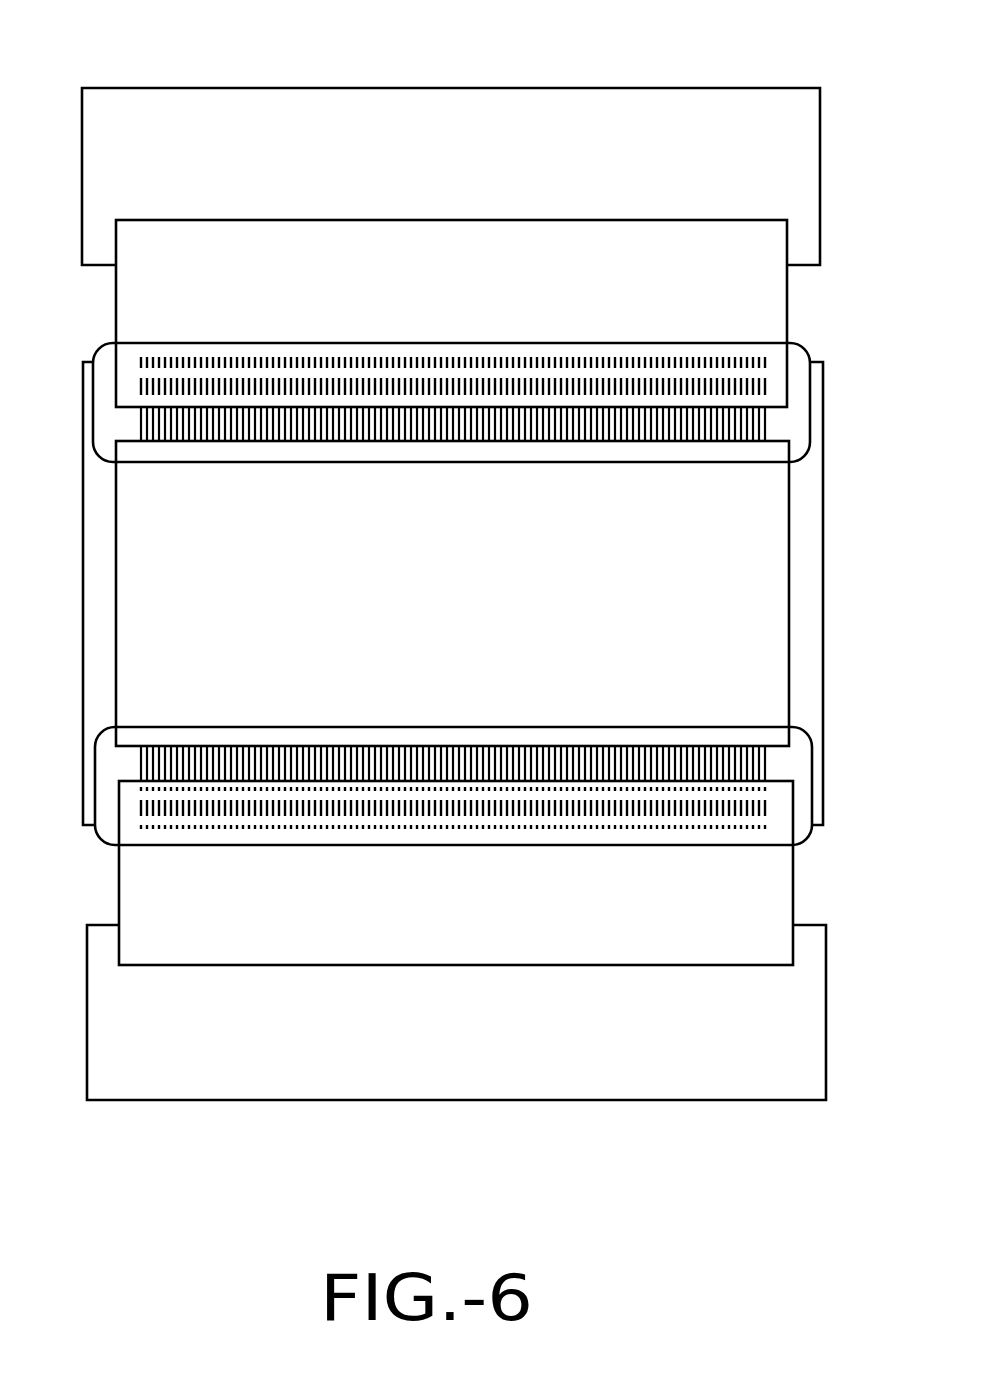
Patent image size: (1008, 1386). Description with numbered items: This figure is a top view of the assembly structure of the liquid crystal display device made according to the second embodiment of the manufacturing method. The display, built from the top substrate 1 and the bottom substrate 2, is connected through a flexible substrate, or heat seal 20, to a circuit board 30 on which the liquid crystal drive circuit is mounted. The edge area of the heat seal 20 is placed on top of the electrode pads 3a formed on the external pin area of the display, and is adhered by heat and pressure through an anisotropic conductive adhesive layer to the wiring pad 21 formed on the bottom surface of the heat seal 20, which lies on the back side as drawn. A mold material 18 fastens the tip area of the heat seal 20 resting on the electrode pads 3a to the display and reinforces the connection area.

The top substrate 1 is at (789, 602).
The bottom substrate 2 is at (824, 692).
The electrode pads 3a is at (388, 426).
The mold material 18 is at (548, 341).
The flexible substrate (heat seal) 20 is at (787, 312).
The wiring pad 21 is at (302, 360).
The circuit board 30 is at (322, 88).